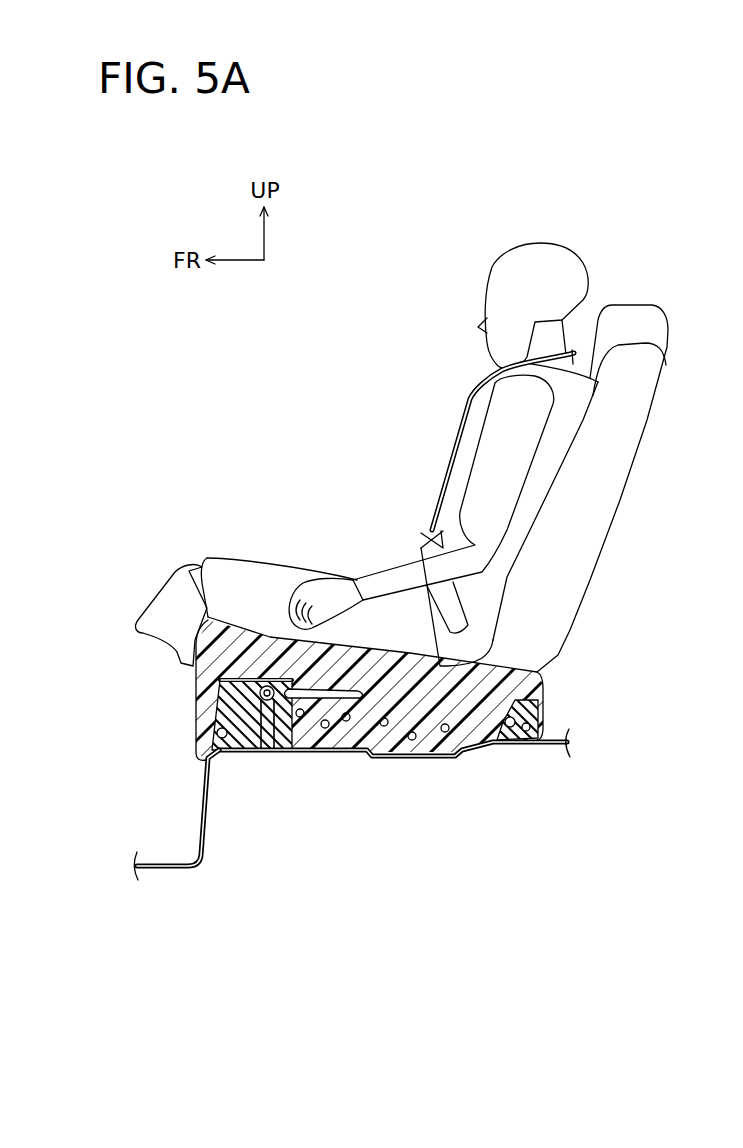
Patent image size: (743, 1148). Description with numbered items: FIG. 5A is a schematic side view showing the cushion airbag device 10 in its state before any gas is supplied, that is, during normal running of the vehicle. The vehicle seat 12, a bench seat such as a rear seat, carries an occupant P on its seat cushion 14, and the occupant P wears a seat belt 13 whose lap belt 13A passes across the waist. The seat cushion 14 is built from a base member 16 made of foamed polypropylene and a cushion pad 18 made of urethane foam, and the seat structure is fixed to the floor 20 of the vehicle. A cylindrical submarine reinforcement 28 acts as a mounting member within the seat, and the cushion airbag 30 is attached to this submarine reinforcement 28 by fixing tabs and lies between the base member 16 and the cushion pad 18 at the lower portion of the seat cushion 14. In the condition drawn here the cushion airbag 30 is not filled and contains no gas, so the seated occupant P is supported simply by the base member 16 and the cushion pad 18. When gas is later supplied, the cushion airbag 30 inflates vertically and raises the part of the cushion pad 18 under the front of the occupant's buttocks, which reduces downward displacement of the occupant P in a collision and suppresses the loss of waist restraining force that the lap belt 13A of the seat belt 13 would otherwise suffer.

The cushion airbag device 10 is at (388, 626).
The vehicle seat 12 is at (637, 450).
The seat belt 13 is at (466, 388).
The lap belt 13A is at (453, 600).
The seat cushion 14 is at (184, 731).
The base member 16 is at (222, 738).
The cushion pad 18 is at (440, 730).
The floor 20 is at (200, 813).
The submarine reinforcement 28 is at (273, 753).
The cushion airbag 30 is at (343, 752).
The occupant P is at (402, 418).